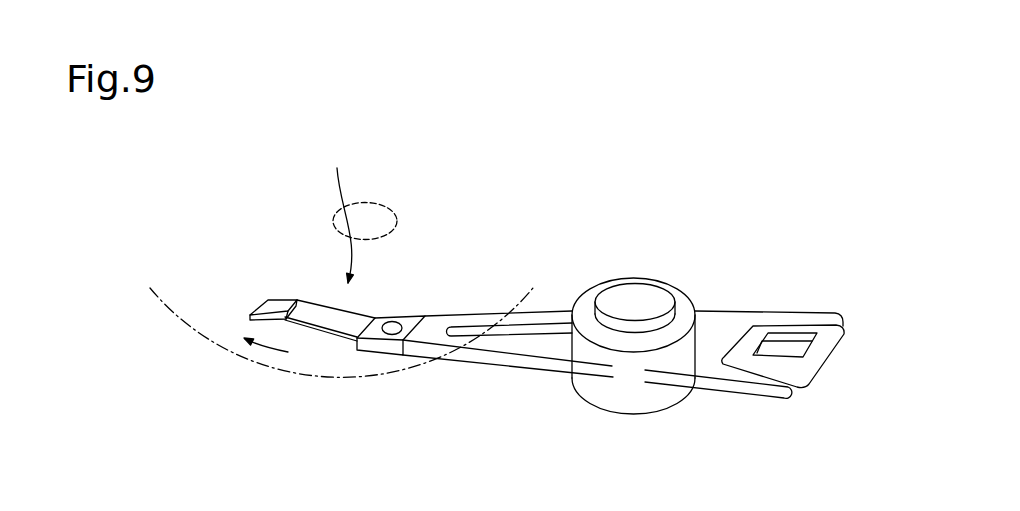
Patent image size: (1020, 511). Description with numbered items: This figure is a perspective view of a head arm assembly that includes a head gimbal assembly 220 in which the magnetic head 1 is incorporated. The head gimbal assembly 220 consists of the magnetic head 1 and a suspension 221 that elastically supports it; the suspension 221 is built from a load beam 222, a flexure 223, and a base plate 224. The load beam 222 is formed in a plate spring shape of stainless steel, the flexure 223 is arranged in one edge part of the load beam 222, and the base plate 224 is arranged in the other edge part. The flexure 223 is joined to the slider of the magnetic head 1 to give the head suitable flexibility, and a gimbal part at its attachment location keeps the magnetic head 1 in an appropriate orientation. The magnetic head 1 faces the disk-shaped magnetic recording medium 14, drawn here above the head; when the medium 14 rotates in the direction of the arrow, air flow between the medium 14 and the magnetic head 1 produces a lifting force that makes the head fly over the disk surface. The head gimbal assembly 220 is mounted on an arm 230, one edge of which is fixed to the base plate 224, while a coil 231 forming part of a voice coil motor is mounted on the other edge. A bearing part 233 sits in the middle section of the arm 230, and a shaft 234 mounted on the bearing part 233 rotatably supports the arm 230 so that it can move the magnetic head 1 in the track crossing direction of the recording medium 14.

The magnetic head 1 is at (278, 307).
The magnetic recording medium (hard disk) 14 is at (288, 376).
The head gimbal assembly 220 is at (347, 353).
The suspension 221 is at (356, 206).
The load beam 222 is at (363, 315).
The flexure 223 is at (250, 313).
The base plate 224 is at (420, 316).
The arm 230 is at (477, 357).
The coil 231 is at (830, 366).
The bearing part 233 is at (591, 297).
The shaft 234 is at (645, 297).